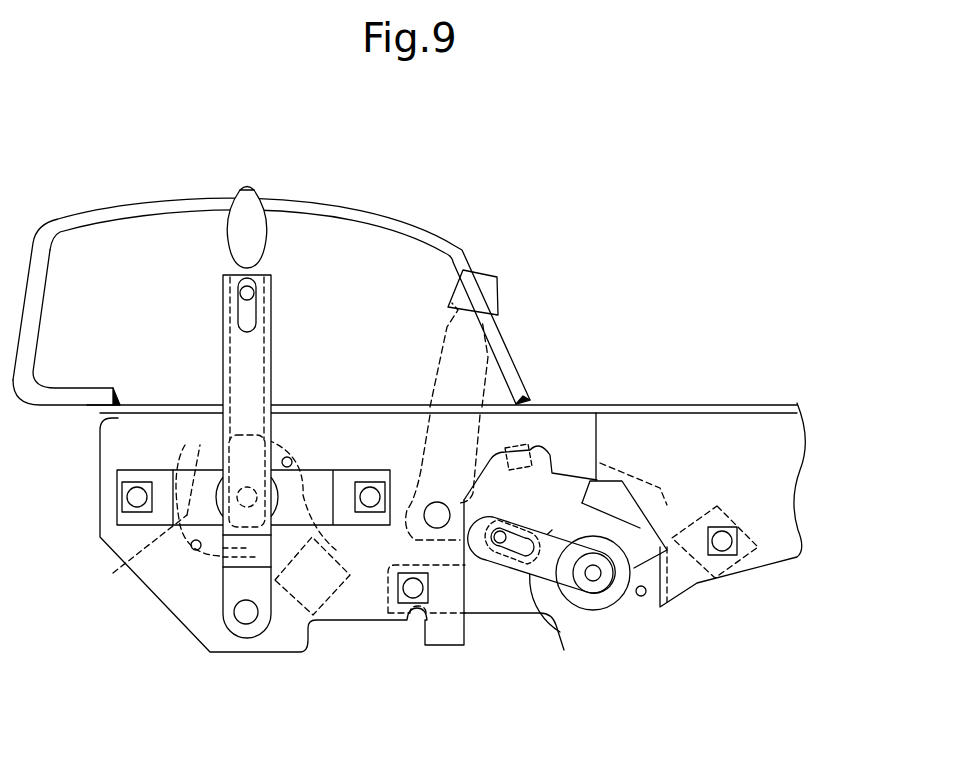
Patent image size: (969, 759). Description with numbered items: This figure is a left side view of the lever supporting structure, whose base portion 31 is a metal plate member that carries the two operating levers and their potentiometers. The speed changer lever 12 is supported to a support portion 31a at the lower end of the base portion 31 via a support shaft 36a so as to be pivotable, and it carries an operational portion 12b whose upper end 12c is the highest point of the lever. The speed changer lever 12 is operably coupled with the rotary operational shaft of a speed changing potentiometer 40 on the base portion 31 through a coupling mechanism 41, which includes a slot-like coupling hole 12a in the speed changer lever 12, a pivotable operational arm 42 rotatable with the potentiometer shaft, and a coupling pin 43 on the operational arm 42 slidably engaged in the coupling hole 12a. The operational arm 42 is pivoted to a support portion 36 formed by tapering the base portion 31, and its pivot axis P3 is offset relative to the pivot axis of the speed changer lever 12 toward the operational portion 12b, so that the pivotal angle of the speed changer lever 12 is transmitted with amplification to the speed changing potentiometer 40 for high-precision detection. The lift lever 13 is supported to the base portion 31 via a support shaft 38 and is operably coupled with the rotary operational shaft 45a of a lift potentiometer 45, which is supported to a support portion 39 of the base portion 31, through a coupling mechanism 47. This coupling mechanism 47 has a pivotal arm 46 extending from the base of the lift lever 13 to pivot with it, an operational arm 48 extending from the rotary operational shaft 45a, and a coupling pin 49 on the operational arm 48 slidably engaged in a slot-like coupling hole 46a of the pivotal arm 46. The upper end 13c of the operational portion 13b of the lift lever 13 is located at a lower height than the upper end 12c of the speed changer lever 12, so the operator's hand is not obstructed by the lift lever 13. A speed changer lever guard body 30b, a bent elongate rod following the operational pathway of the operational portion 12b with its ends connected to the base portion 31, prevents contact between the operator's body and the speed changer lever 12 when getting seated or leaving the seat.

The speed changer lever guard body 30b is at (127, 213).
The base portion 31 is at (778, 406).
The support portion 31a is at (290, 655).
The support portion 36 is at (158, 470).
The support shaft 36a is at (246, 614).
The support shaft 38 is at (437, 510).
The support portion 39 is at (527, 607).
The speed changing potentiometer 40 is at (216, 527).
The coupling mechanism 41 is at (207, 295).
The operational arm 42 is at (272, 372).
The coupling pin 43 is at (248, 293).
The lift potentiometer 45 is at (640, 540).
The rotary operational shaft 45a is at (595, 580).
The pivotal arm 46 is at (480, 560).
The coupling hole 46a is at (560, 512).
The coupling mechanism 47 is at (522, 496).
The operational arm 48 is at (563, 612).
The coupling pin 49 is at (500, 542).
The speed changer lever 12 is at (223, 368).
The coupling hole 12a is at (238, 316).
The operational portion 12b is at (258, 233).
The upper end 12c is at (246, 186).
The lift lever 13 is at (444, 350).
The operational portion 13b is at (500, 290).
The upper end 13c is at (481, 272).
The pivot axis P3 is at (246, 497).